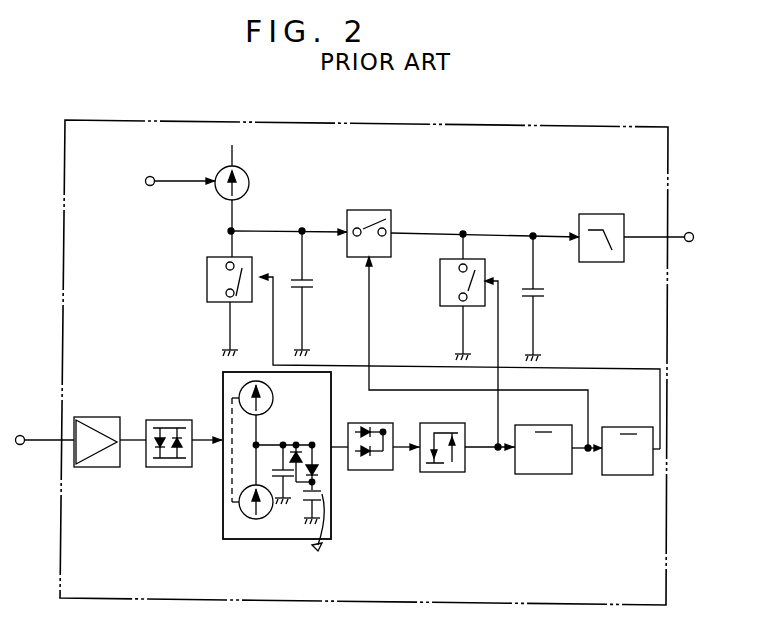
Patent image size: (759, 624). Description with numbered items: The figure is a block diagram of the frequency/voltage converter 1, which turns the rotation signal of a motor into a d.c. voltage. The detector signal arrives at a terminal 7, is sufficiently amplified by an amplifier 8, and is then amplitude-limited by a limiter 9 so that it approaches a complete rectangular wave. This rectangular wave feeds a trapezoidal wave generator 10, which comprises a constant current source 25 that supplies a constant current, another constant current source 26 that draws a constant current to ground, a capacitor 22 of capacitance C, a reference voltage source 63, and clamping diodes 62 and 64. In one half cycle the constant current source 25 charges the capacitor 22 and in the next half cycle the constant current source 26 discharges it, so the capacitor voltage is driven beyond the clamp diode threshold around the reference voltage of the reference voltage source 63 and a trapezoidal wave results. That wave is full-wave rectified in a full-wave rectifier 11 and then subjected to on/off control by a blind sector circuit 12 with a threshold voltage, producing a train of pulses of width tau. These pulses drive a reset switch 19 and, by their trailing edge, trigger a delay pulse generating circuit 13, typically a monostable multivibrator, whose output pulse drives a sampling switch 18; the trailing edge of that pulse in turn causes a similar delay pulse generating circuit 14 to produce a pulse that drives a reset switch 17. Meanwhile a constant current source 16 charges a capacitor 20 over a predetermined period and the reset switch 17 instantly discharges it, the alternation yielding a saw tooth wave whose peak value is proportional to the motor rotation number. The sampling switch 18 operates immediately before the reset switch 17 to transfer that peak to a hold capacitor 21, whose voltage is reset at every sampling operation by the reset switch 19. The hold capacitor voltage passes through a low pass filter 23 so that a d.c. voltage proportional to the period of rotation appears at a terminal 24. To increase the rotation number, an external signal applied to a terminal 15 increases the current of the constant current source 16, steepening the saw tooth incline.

The frequency/voltage converter 1 is at (594, 124).
The terminal 7 is at (24, 435).
The amplifier 8 is at (90, 418).
The limiter 9 is at (164, 420).
The trapezoidal wave generator 10 is at (233, 544).
The full-wave rectifier 11 is at (363, 414).
The blind sector circuit 12 is at (435, 415).
The delay pulse generating circuit 13 is at (525, 417).
The delay pulse generating circuit 14 is at (613, 418).
The terminal 15 is at (154, 177).
The constant current source 16 is at (243, 170).
The reset switch 17 is at (204, 295).
The sampling switch 18 is at (378, 208).
The reset switch 19 is at (439, 311).
The capacitor 20 is at (316, 284).
The hold capacitor 21 is at (547, 298).
The capacitor 22 is at (297, 514).
The low pass filter 23 is at (597, 213).
The terminal 24 is at (689, 232).
The constant current source 25 is at (273, 397).
The constant current source 26 is at (249, 510).
The clamping diode 62 is at (316, 470).
The reference voltage source 63 is at (325, 498).
The clamping diode 64 is at (300, 457).